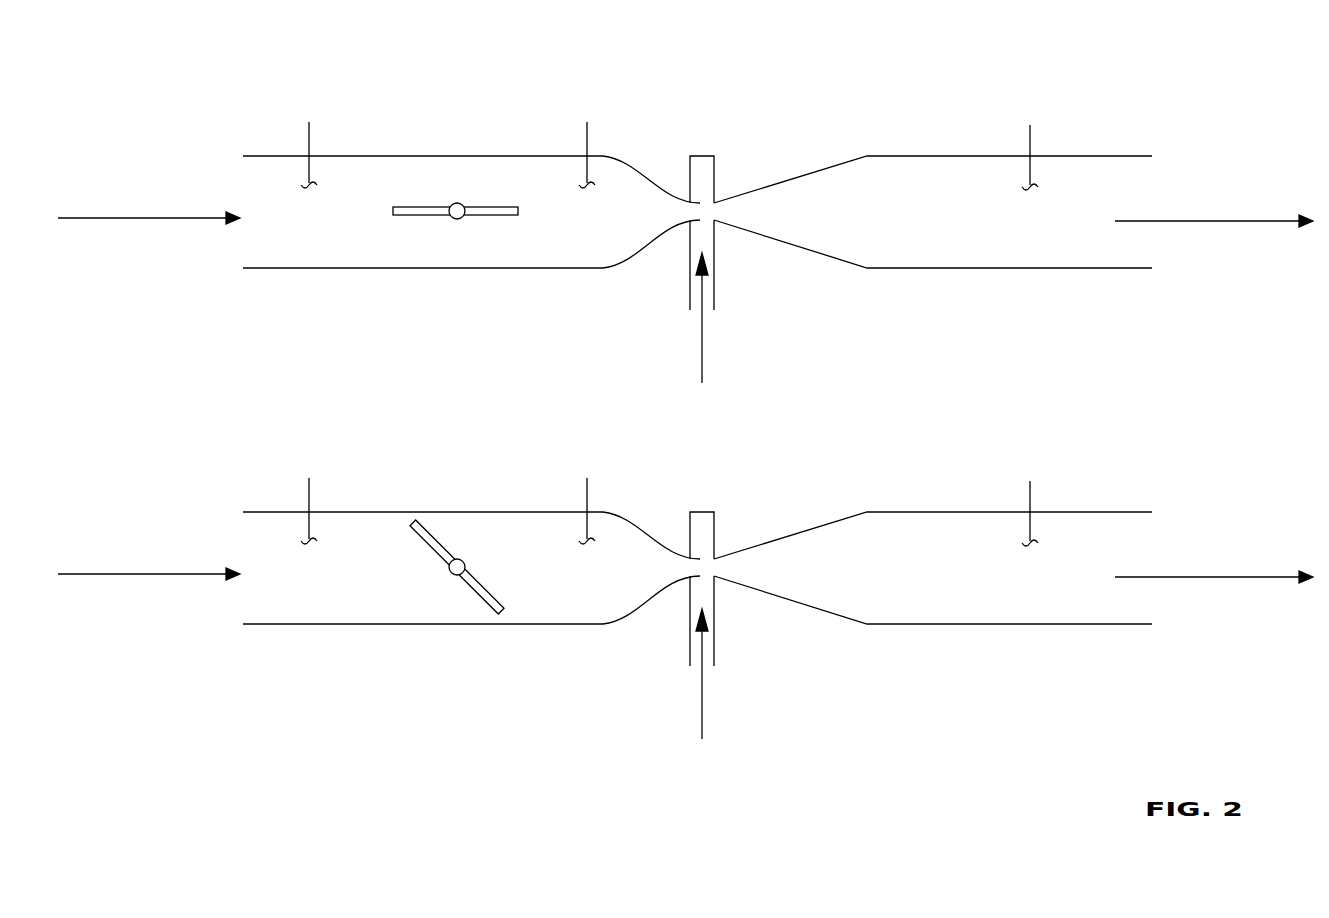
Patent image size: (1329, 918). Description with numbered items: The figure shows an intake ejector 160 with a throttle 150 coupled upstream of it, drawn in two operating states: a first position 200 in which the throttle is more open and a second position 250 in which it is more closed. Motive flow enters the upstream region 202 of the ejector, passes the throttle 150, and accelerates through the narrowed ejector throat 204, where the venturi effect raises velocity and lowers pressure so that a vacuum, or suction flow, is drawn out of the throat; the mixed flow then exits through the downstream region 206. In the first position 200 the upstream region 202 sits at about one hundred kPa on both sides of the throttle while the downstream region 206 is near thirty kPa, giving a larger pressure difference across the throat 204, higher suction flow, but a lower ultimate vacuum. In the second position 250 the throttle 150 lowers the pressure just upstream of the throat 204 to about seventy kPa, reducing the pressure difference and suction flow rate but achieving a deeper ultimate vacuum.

The throttle 150 is at (478, 207).
The ejector 160 is at (742, 105).
The first position (throttle more open) 200 is at (1173, 88).
The upstream region 202 is at (395, 156).
The ejector throat 204 is at (707, 193).
The downstream region 206 is at (878, 156).
The second position (throttle more closed) 250 is at (1173, 444).